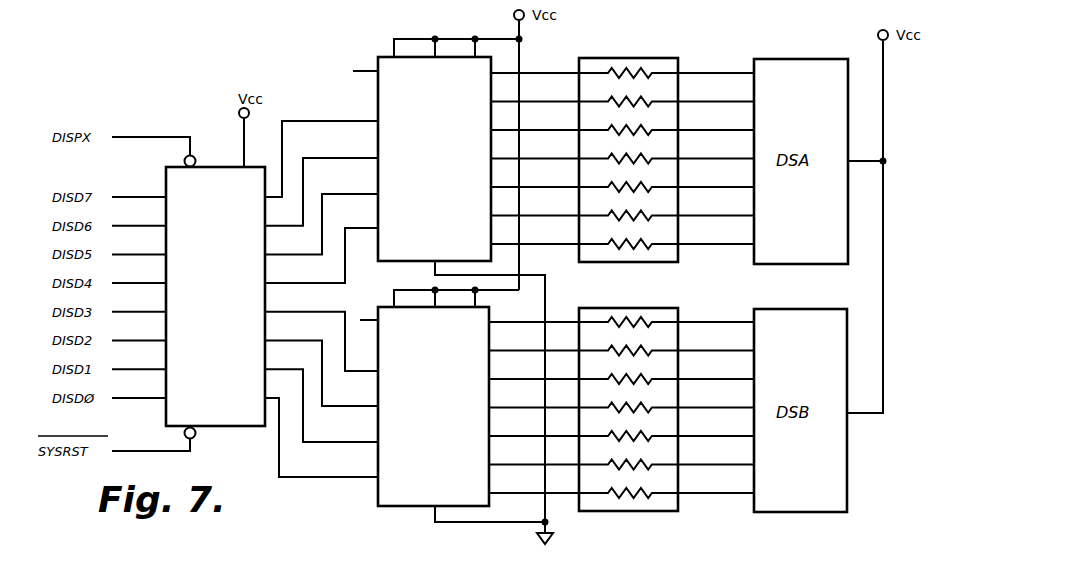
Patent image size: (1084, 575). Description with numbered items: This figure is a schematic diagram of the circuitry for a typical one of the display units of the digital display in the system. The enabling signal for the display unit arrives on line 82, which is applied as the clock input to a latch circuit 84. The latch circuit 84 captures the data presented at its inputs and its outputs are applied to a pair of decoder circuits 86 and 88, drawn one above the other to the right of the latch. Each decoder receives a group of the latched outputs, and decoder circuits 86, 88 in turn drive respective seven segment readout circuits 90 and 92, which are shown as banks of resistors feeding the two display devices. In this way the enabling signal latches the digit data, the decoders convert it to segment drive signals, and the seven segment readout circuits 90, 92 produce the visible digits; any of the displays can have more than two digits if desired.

The line 82 is at (162, 138).
The latch circuit 84 is at (227, 178).
The decoder circuit 86 is at (390, 66).
The decoder circuit 88 is at (386, 497).
The seven segment readout circuit 90 is at (670, 63).
The seven segment readout circuit 92 is at (670, 313).